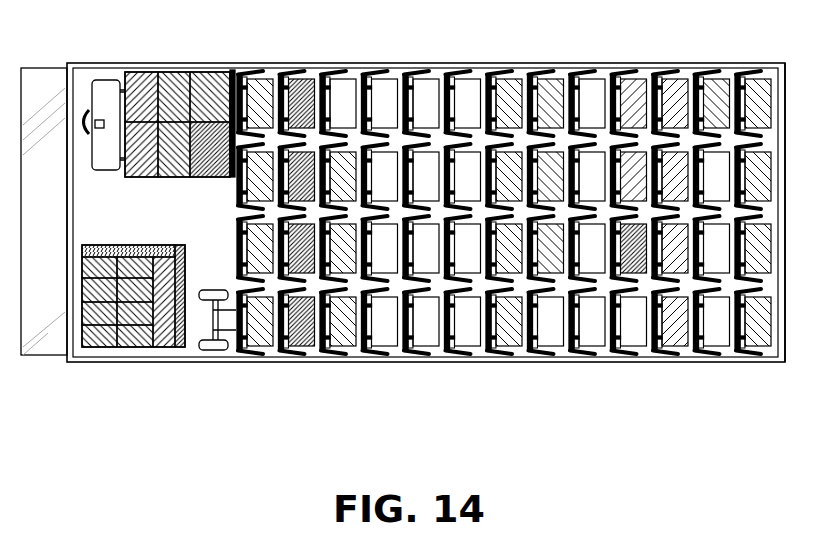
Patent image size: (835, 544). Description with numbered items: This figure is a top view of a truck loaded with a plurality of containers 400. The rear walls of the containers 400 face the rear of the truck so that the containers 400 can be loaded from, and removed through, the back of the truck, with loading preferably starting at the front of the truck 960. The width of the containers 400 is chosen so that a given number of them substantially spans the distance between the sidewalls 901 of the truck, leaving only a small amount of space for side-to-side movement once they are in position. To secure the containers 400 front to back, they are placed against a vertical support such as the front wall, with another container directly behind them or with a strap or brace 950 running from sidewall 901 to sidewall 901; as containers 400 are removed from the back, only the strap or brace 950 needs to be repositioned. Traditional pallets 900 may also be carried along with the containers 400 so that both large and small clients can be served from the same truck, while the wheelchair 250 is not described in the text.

The wheelchair 250 is at (227, 348).
The container 400 is at (450, 77).
The traditional pallet 900 is at (147, 88).
The sidewall 901 is at (354, 64).
The strap or brace 950 is at (247, 130).
The front of the truck 960 is at (786, 78).